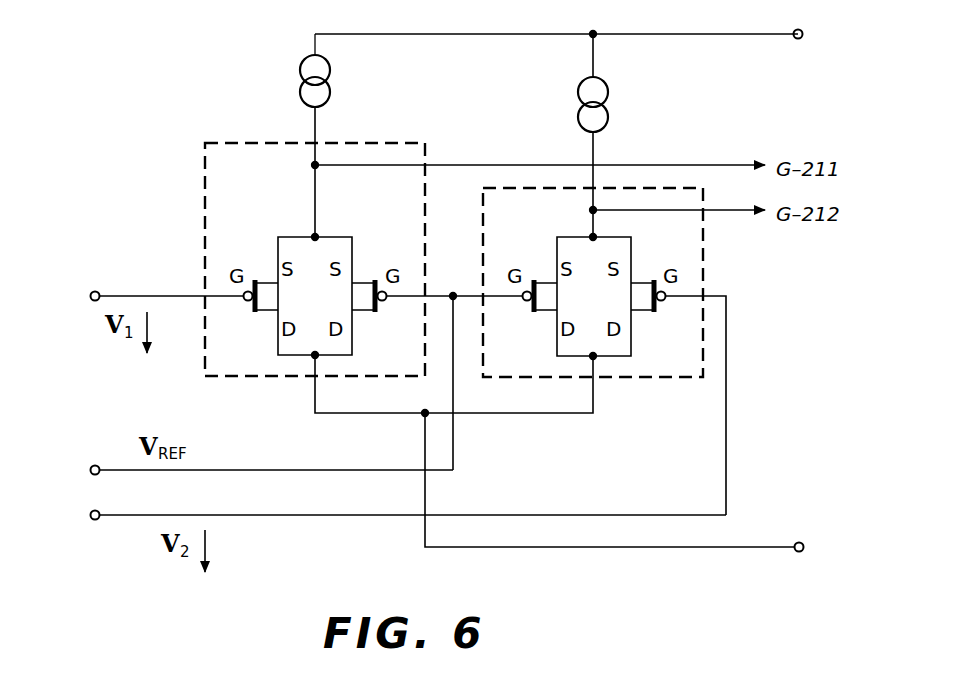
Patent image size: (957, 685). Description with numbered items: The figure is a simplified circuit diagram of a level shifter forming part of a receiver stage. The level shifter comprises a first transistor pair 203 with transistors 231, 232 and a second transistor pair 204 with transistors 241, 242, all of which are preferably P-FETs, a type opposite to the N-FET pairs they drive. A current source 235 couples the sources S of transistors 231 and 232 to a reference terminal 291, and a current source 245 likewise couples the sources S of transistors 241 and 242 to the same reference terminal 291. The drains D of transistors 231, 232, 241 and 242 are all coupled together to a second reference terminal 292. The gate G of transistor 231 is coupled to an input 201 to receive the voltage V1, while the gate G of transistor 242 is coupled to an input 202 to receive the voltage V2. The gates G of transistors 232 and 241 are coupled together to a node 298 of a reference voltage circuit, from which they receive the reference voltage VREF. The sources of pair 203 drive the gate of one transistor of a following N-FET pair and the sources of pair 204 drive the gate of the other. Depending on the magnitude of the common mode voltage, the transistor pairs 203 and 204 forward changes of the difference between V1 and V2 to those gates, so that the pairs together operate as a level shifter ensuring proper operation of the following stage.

The input 201 is at (97, 290).
The input 202 is at (95, 520).
The transistor pair 203 is at (375, 143).
The transistor pair 204 is at (645, 378).
The transistor 231 is at (256, 317).
The transistor 232 is at (372, 317).
The current source 235 is at (300, 61).
The transistor 241 is at (535, 317).
The transistor 242 is at (651, 317).
The current source 245 is at (578, 83).
The reference terminal 291 is at (798, 39).
The reference terminal 292 is at (800, 542).
The node 298 is at (97, 464).